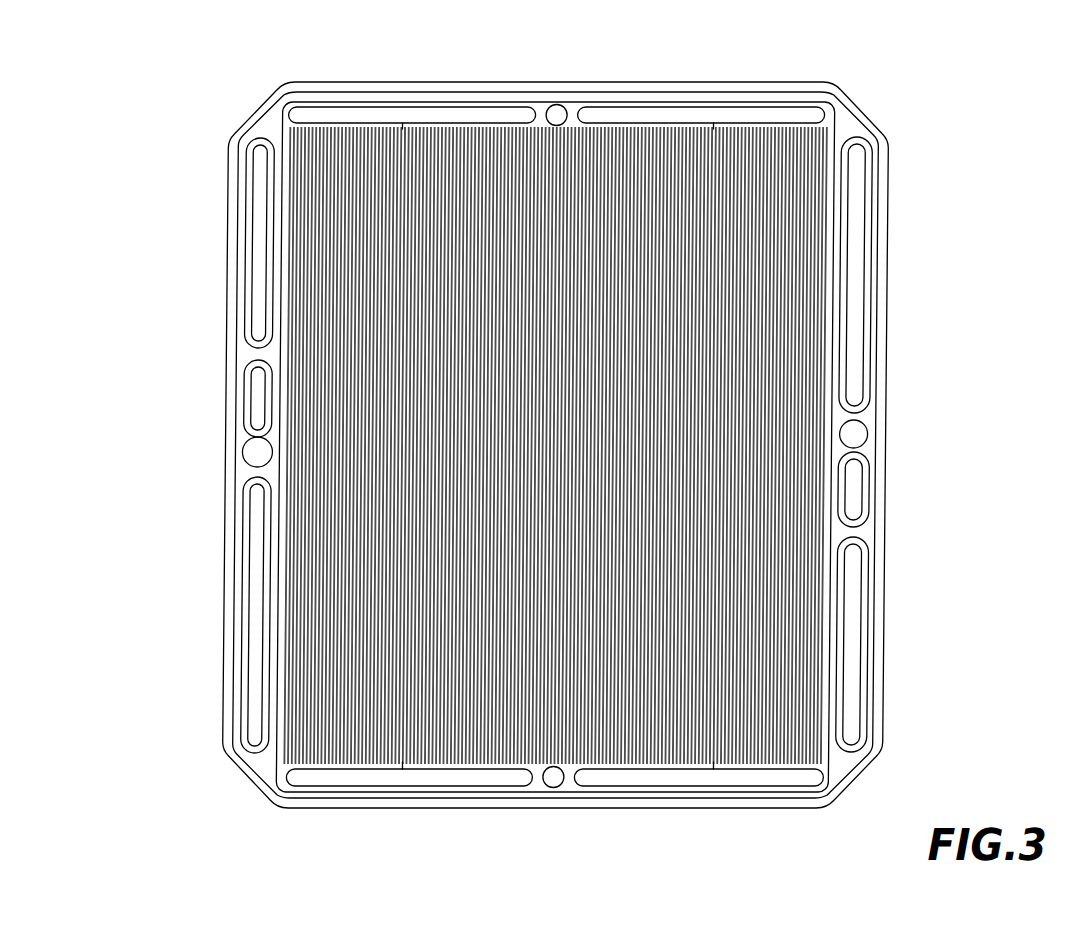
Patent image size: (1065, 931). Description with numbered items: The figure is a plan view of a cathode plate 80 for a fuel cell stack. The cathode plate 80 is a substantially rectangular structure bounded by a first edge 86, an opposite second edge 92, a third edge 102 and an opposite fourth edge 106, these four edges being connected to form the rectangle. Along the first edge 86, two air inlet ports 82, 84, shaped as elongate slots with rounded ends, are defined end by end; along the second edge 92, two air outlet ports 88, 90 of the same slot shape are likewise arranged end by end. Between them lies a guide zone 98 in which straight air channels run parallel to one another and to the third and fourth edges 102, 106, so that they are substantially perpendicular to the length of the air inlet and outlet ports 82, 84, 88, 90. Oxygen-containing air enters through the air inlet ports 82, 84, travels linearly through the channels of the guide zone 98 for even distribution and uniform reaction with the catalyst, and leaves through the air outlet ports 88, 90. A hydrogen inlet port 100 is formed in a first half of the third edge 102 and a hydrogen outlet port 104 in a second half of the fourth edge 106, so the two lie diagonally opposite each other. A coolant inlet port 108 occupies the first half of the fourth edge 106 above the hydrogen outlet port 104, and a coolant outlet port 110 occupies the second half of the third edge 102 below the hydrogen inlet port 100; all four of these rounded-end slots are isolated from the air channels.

The cathode plate 80 is at (90, 810).
The air inlet port 82 is at (304, 114).
The air inlet port 84 is at (818, 112).
The first edge 86 is at (558, 71).
The air outlet port 88 is at (303, 778).
The air outlet port 90 is at (738, 788).
The second edge 92 is at (546, 836).
The guide zone 98 is at (318, 486).
The hydrogen inlet port 100 is at (258, 232).
The third edge 102 is at (161, 437).
The hydrogen outlet port 104 is at (857, 650).
The fourth edge 106 is at (950, 438).
The coolant inlet port 108 is at (858, 295).
The coolant outlet port 110 is at (262, 592).